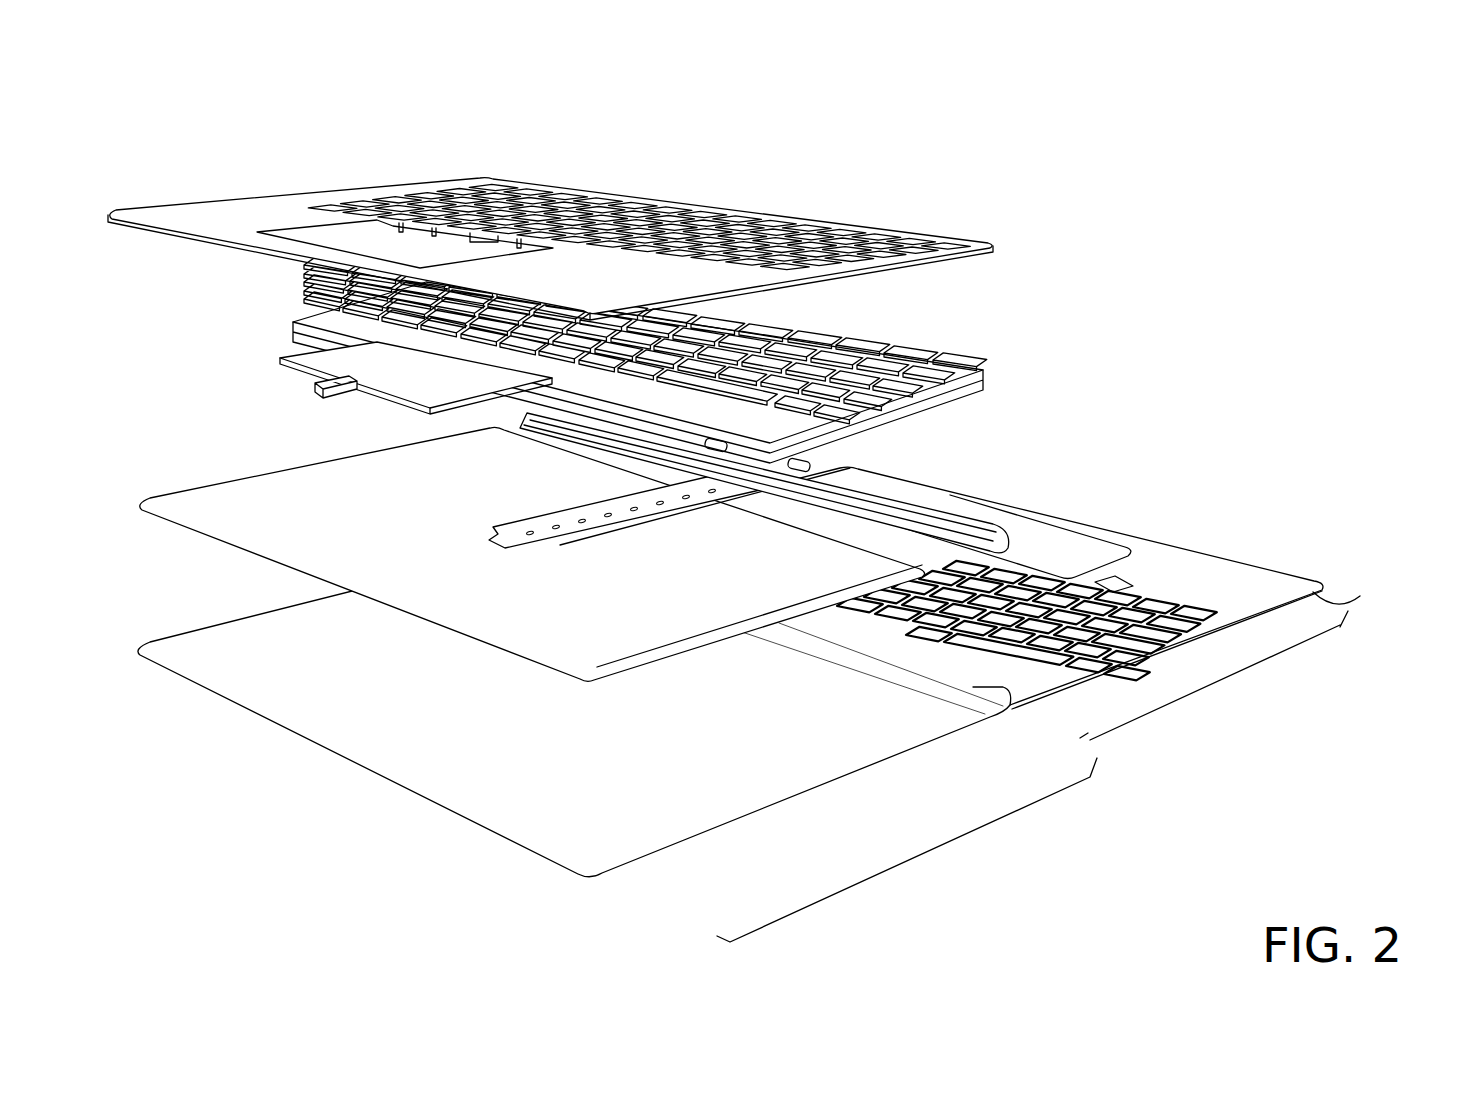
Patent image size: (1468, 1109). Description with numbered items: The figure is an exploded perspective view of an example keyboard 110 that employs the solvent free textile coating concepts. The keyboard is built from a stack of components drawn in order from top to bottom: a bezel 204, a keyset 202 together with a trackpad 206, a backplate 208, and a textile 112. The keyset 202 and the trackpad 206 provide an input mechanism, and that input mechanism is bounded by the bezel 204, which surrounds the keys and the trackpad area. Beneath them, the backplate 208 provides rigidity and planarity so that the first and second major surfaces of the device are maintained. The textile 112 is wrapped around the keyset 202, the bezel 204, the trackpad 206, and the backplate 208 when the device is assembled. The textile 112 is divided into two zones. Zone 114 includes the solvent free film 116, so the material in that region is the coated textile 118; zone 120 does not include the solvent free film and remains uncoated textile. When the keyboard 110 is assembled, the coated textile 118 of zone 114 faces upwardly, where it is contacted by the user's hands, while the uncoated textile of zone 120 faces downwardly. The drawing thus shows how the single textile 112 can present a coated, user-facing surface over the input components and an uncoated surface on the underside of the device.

The keyboard 110 is at (764, 493).
The textile 112 is at (730, 672).
The zone 114 is at (1172, 702).
The solvent free film 116 is at (1333, 595).
The coated textile 118 is at (1152, 750).
The zone 120 is at (830, 898).
The keyset 202 is at (966, 352).
The bezel 204 is at (270, 214).
The trackpad 206 is at (279, 350).
The backplate 208 is at (532, 554).